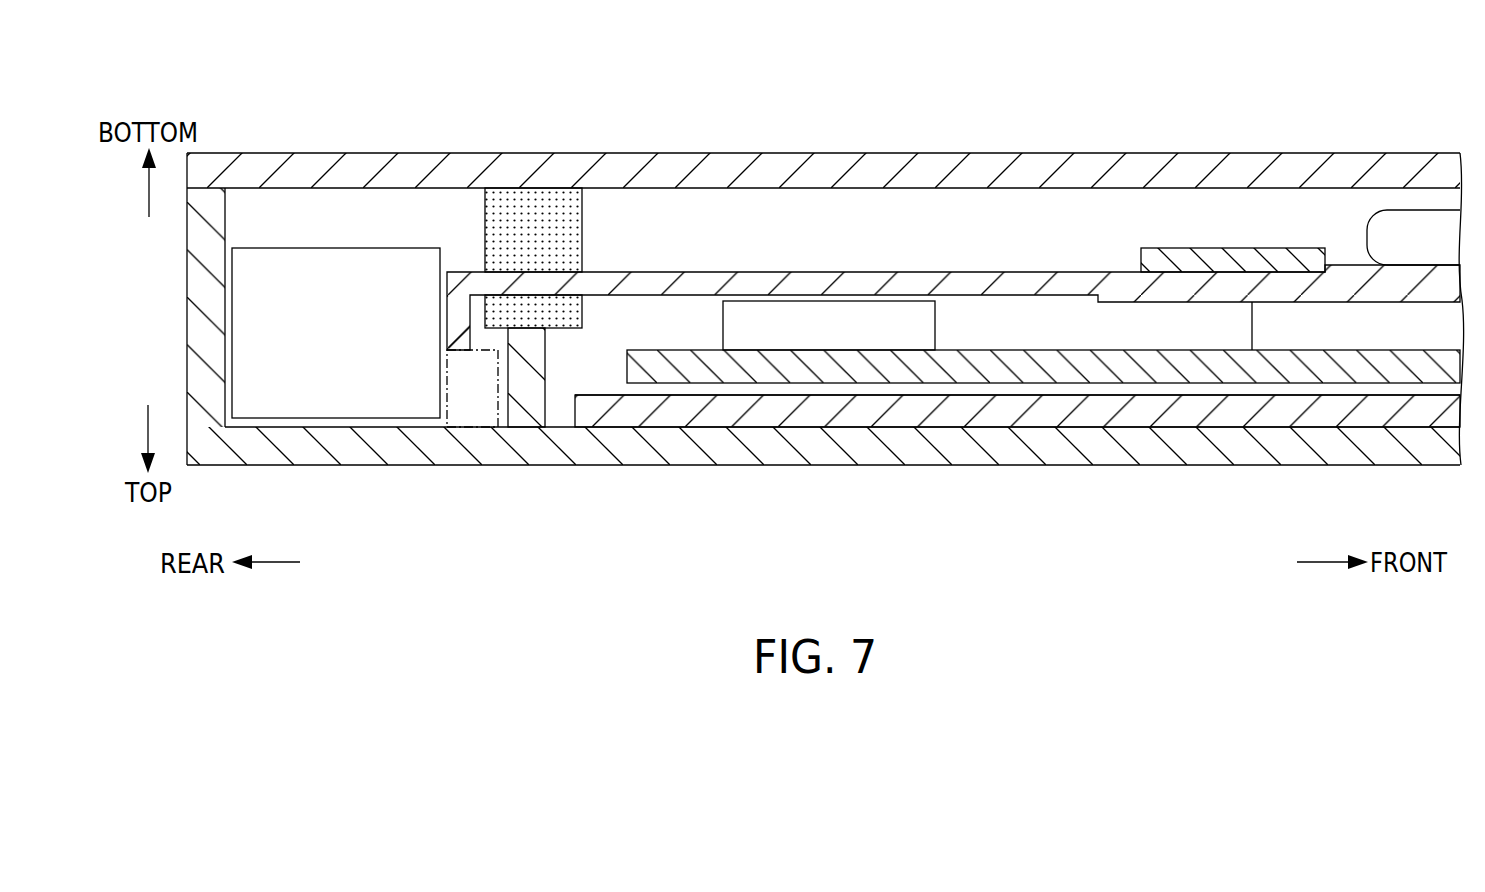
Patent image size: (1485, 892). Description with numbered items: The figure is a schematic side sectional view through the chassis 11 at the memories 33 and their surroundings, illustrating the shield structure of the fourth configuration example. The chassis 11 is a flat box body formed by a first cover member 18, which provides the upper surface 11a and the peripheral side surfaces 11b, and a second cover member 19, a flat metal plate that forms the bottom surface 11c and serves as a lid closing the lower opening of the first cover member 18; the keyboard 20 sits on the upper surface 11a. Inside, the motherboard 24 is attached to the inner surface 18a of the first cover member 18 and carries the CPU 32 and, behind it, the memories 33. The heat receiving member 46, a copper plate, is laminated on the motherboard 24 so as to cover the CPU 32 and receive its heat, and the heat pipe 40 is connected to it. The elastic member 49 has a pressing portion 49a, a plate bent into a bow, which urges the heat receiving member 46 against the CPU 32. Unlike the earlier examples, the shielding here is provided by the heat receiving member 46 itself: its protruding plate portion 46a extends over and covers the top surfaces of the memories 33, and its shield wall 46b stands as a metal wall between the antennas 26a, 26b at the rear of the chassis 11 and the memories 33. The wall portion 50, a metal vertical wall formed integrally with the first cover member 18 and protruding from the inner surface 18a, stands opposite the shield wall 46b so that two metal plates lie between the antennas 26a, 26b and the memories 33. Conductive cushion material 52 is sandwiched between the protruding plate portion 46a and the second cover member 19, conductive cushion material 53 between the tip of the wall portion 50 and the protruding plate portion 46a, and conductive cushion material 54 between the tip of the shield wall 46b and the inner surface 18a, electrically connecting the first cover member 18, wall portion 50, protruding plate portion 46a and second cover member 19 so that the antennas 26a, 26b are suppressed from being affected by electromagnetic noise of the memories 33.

The chassis 11 is at (217, 92).
The upper surface 11a is at (775, 465).
The peripheral side surfaces 11b is at (187, 301).
The bottom surface 11c is at (922, 152).
The first cover member 18 is at (932, 480).
The inner surface 18a is at (862, 413).
The second cover member 19 is at (1081, 151).
The keyboard 20 is at (1010, 413).
The motherboard 24 is at (1090, 370).
The antenna 26a is at (335, 282).
The antenna 26b is at (336, 333).
The CPU 32 is at (1338, 325).
The memories 33 is at (845, 317).
The heat pipe 40 is at (1417, 228).
The heat receiving member 46 is at (1207, 315).
The protruding plate portion 46a is at (715, 283).
The shield wall 46b is at (457, 320).
The elastic member 49 is at (1210, 236).
The pressing portion 49a is at (1275, 260).
The wall portion 50 is at (530, 380).
The conductive cushion material 52 is at (515, 210).
The conductive cushion material 53 is at (555, 318).
The conductive cushion material 54 is at (473, 408).